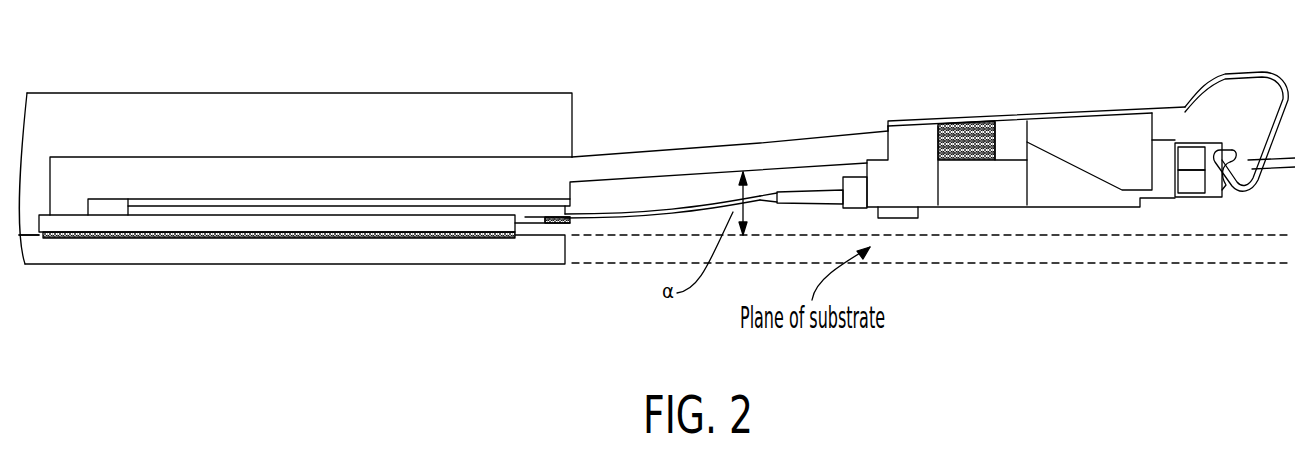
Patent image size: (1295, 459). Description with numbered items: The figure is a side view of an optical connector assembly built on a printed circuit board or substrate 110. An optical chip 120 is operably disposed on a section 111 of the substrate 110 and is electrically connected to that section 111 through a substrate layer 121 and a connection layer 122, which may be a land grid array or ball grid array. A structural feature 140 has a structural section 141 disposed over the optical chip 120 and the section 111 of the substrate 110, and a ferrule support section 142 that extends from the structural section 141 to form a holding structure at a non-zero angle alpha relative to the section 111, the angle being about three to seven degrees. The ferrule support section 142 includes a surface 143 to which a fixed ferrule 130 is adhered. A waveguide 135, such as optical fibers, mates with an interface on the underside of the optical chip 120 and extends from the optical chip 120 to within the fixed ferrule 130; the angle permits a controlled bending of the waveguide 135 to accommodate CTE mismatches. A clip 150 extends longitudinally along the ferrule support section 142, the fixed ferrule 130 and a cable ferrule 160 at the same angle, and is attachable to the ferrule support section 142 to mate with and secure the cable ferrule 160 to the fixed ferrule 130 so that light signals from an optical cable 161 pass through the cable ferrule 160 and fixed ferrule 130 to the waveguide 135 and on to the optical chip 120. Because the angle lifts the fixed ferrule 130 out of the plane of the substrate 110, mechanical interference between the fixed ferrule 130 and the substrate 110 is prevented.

The substrate 110 is at (73, 265).
The section of the substrate 111 is at (147, 248).
The optical chip 120 is at (220, 208).
The substrate layer 121 is at (315, 222).
The connection layer 122 is at (383, 237).
The fixed ferrule 130 is at (978, 178).
The waveguide 135 is at (628, 218).
The structural feature 140 is at (287, 170).
The structural section 141 is at (240, 183).
The ferrule support section 142 is at (820, 145).
The surface 143 is at (967, 157).
The clip 150 is at (1100, 127).
The cable ferrule 160 is at (1050, 177).
The optical cable 161 is at (1282, 168).